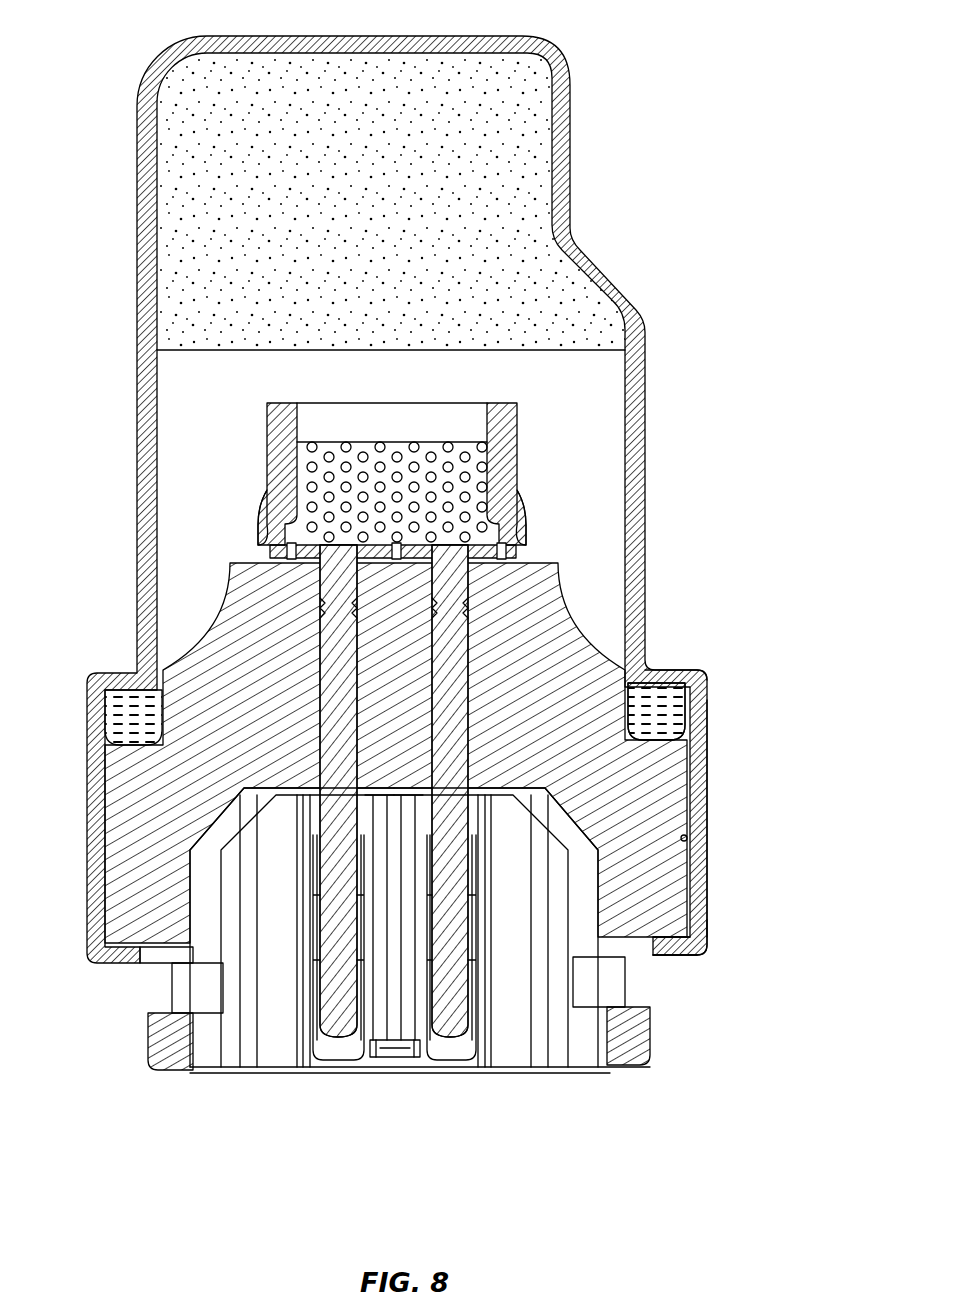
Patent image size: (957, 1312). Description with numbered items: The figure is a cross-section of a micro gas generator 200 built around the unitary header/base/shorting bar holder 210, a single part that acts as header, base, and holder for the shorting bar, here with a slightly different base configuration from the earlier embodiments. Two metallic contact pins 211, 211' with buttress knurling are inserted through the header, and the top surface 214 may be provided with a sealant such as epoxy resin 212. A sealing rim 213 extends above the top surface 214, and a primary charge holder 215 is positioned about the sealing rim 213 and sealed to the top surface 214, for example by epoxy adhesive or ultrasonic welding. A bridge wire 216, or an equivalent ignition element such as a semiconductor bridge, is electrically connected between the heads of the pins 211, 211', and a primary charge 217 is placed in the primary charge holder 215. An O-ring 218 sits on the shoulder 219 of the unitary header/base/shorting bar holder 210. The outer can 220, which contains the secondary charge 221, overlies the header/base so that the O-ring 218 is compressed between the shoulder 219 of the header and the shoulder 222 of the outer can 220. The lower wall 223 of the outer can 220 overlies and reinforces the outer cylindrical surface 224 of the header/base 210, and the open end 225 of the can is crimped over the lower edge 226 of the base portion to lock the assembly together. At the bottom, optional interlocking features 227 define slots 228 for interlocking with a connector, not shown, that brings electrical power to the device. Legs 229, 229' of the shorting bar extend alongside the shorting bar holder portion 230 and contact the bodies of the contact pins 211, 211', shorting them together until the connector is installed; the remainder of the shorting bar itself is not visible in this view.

The micro gas generator 200 is at (676, 494).
The unitary header/base/shorting bar holder 210 is at (673, 790).
The metallic contact pin 211 is at (334, 845).
The metallic contact pin 211' is at (466, 845).
The epoxy resin 212 is at (262, 535).
The sealing rim 213 is at (513, 528).
The top surface 214 is at (524, 558).
The primary charge holder 215 is at (500, 455).
The bridge wire 216 is at (387, 540).
The primary charge 217 is at (400, 445).
The O-ring 218 is at (688, 700).
The shoulder 219 is at (688, 720).
The outer can 220 is at (560, 138).
The secondary charge 221 is at (375, 80).
The shoulder 222 is at (672, 670).
The lower wall 223 is at (705, 880).
The outer cylindrical surface 224 is at (690, 832).
The open end 225 is at (655, 955).
The lower edge 226 is at (690, 930).
The interlocking features 227 is at (630, 1045).
The slots 228 is at (605, 978).
The leg of the shorting bar 229 is at (292, 954).
The leg of the shorting bar 229' is at (496, 954).
The shorting bar holder portion 230 is at (400, 1047).